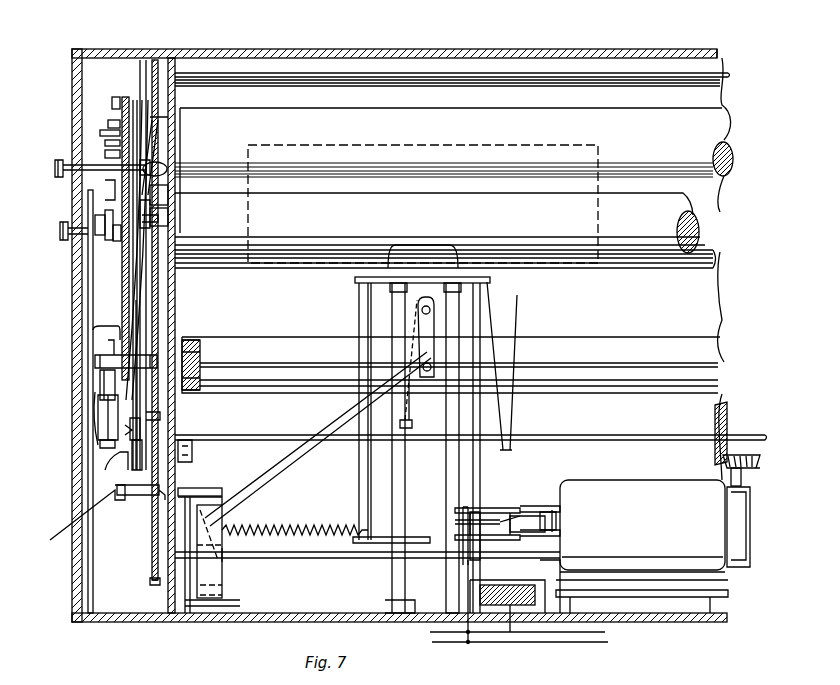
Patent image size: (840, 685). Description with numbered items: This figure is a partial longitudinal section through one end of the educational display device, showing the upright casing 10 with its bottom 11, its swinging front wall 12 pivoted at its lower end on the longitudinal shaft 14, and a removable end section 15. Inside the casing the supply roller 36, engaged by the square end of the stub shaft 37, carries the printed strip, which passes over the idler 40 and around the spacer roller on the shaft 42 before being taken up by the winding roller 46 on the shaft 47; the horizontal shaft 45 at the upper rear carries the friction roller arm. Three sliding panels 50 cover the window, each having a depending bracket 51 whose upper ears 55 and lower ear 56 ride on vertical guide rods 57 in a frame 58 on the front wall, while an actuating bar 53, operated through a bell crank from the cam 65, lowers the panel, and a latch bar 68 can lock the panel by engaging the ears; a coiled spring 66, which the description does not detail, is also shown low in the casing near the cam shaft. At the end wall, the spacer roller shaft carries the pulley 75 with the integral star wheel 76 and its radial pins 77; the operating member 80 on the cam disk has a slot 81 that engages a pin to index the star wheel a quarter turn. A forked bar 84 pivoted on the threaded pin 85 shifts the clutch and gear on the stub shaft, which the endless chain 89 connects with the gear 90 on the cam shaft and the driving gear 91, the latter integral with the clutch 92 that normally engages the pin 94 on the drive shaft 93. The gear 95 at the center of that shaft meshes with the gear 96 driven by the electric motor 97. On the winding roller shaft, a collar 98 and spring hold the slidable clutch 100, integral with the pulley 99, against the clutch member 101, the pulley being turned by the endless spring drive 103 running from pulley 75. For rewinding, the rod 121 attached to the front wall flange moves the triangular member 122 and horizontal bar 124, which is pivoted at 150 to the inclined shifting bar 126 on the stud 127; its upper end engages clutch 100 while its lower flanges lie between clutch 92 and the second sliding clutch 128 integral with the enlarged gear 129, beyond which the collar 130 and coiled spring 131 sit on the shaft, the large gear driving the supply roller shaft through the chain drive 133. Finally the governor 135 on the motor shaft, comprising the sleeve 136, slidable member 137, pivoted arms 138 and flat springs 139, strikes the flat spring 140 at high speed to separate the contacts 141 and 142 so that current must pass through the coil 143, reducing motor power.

The casing 10 is at (648, 58).
The bottom 11 is at (370, 613).
The front wall 12 is at (714, 186).
The shaft 14 is at (292, 560).
The end sections 15 is at (76, 84).
The supply roller 36 is at (292, 348).
The stub shaft 37 is at (200, 356).
The idler 40 is at (716, 280).
The shaft 42 is at (546, 118).
The horizontal shaft 45 is at (350, 78).
The winding roller 46 is at (700, 225).
The shaft 47 is at (75, 255).
The doors or panels 50 is at (410, 197).
The depending bracket 51 is at (428, 318).
The actuating bar 53 is at (300, 455).
The ears 55 is at (490, 287).
The ear 56 is at (410, 422).
The vertical guide rods 57 is at (403, 458).
The frame 58 is at (364, 486).
The cam 65 is at (222, 575).
The spring 66 is at (320, 524).
The swinging latch bar 68 is at (505, 412).
The pulley 75 is at (130, 104).
The star wheel 76 is at (110, 120).
The horizontal pins 77 is at (102, 132).
The operating member 80 is at (110, 245).
The slot 81 is at (108, 186).
The forked bar 84 is at (165, 128).
The threaded pin 85 is at (108, 165).
The endless chain 89 is at (160, 228).
The gear 90 is at (150, 578).
The driving gear 91 is at (160, 414).
The clutch 92 is at (136, 414).
The drive shaft 93 is at (266, 434).
The pin 94 is at (143, 457).
The gear 95 is at (725, 410).
The gear 96 is at (750, 463).
The electric motor 97 is at (727, 572).
The collar 98 is at (98, 235).
The pulley 99 is at (118, 258).
The slidable clutch 100 is at (160, 204).
The clutch member 101 is at (160, 222).
The endless spring drive 103 is at (120, 100).
The rearwardly extending rod 121 is at (240, 600).
The triangular member 122 is at (224, 498).
The horizontal bar 124 is at (201, 483).
The vertical flanged shifting bar 126 is at (136, 335).
The stud 127 is at (140, 290).
The second sliding clutch 128 is at (106, 466).
The enlarged gear 129 is at (71, 522).
The collar 130 is at (100, 437).
The coiled spring 131 is at (100, 425).
The chain drive 133 is at (102, 382).
The governor 135 is at (540, 503).
The sleeve 136 is at (563, 503).
The slidable member 137 is at (485, 505).
The pivoted arms 138 is at (468, 512).
The flat springs 139 is at (514, 503).
The flat spring 140 is at (442, 522).
The electrical contact 141 is at (455, 511).
The contact 142 is at (446, 508).
The coil 143 is at (506, 630).
The pivotal connection 150 is at (118, 497).